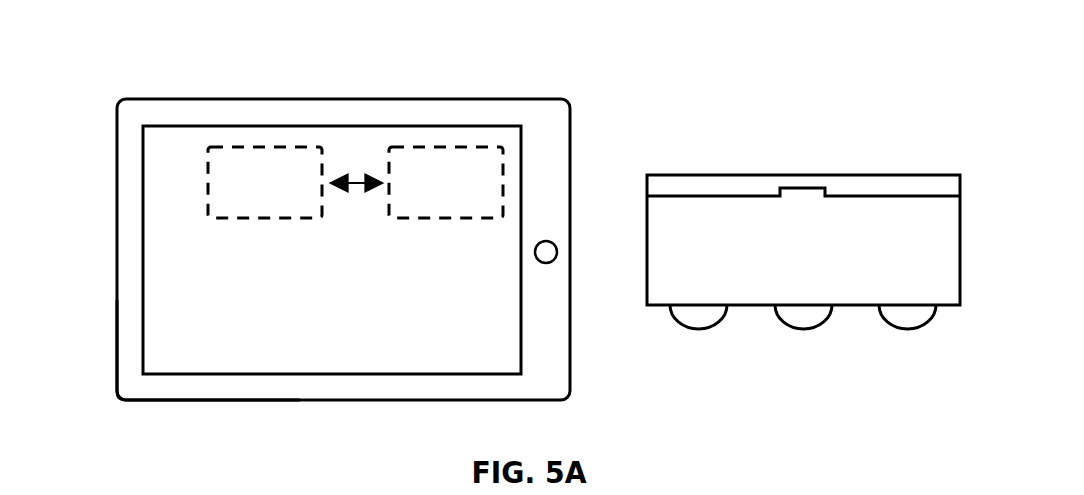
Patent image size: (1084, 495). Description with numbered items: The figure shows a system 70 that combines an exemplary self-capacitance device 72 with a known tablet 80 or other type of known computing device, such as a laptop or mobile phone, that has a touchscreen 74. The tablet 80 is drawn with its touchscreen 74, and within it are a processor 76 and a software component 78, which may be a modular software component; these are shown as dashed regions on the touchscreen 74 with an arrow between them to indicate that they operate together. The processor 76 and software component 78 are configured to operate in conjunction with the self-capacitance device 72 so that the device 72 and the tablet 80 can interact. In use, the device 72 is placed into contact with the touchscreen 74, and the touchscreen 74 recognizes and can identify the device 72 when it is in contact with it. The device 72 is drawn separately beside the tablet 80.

The system 70 is at (115, 97).
The self-capacitance device 72 is at (705, 143).
The touchscreen 74 is at (173, 267).
The processor 76 is at (443, 147).
The software component 78 is at (268, 147).
The tablet 80 is at (190, 400).